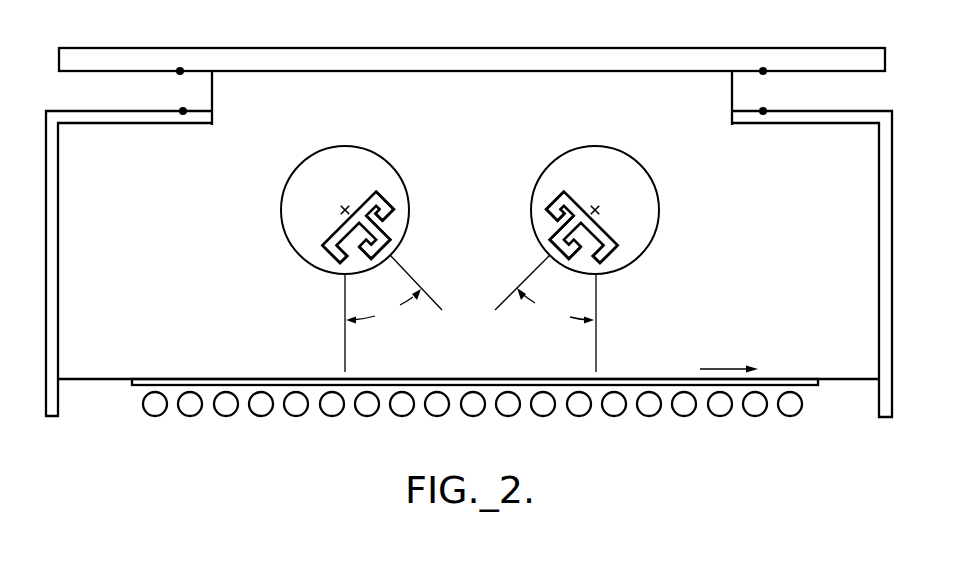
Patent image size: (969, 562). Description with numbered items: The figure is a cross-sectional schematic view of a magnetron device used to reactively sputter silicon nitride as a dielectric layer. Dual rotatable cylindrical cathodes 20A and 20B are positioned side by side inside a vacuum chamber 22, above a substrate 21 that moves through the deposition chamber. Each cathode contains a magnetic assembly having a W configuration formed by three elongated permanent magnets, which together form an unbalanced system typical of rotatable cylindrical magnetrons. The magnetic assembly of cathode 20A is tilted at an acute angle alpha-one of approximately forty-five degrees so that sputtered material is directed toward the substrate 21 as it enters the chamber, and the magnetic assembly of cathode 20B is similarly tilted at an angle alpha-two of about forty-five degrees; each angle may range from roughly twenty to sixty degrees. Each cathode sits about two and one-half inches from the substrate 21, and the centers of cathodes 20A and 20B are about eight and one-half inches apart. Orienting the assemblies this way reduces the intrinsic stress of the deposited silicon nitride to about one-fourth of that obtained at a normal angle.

The cathode 20A is at (625, 153).
The cathode 20B is at (345, 146).
The substrate 21 is at (185, 379).
The vacuum chamber 22 is at (165, 166).